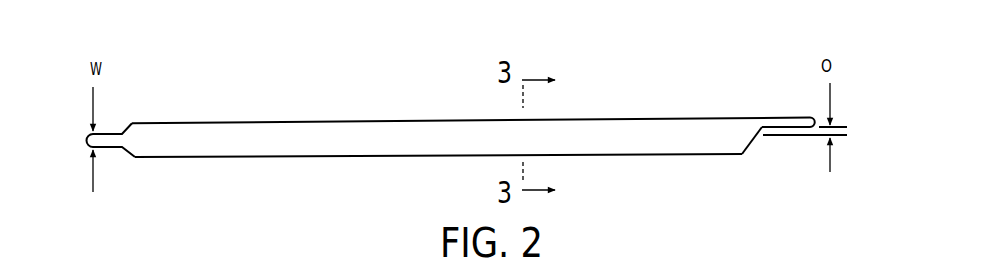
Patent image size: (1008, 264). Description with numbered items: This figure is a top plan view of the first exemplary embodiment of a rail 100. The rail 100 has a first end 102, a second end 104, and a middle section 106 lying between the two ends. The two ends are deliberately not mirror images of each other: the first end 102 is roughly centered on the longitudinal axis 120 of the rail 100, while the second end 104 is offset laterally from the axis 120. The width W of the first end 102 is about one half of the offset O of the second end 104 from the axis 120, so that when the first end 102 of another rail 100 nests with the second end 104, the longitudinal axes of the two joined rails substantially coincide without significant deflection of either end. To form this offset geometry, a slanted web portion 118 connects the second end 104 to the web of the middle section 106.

The rail 100 is at (295, 176).
The first end 102 is at (128, 106).
The second end 104 is at (772, 104).
The middle section 106 is at (249, 109).
The slanted web portion 118 is at (753, 143).
The longitudinal axis 120 is at (843, 139).